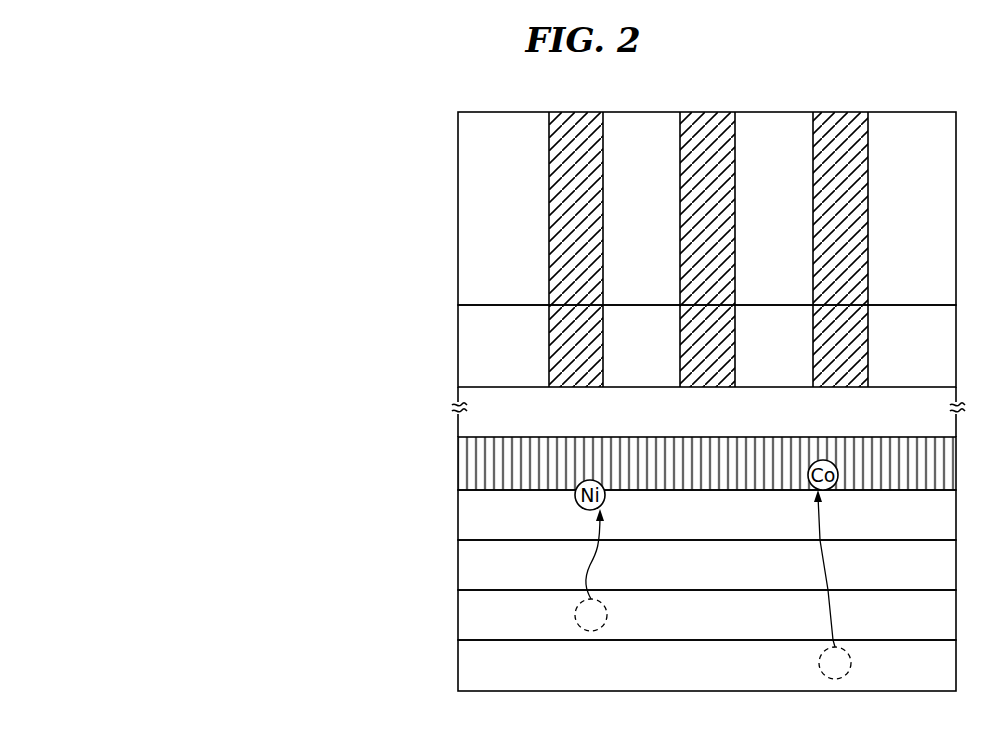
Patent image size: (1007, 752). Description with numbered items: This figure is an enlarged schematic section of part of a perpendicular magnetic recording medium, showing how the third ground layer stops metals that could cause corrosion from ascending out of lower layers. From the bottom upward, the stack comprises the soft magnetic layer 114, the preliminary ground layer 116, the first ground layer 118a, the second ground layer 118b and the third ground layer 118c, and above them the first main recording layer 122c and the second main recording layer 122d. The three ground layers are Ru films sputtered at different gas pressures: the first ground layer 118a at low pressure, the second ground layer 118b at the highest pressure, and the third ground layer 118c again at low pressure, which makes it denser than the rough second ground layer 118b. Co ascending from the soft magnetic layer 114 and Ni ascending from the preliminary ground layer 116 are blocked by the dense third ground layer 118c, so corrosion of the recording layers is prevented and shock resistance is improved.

The second main recording layer 122d is at (458, 213).
The first main recording layer 122c is at (458, 335).
The third ground layer 118c is at (458, 460).
The second ground layer 118b is at (458, 518).
The first ground layer 118a is at (458, 553).
The preliminary ground layer 116 is at (458, 612).
The soft magnetic layer 114 is at (458, 662).